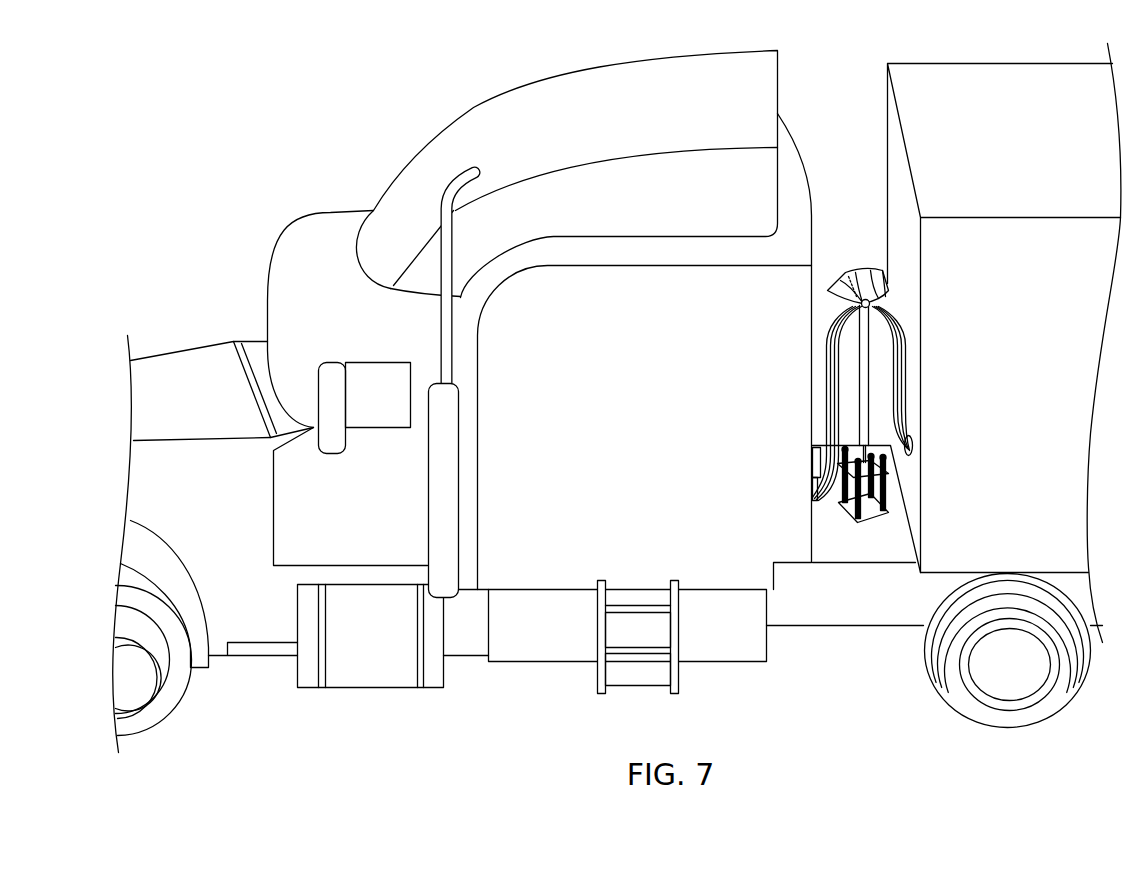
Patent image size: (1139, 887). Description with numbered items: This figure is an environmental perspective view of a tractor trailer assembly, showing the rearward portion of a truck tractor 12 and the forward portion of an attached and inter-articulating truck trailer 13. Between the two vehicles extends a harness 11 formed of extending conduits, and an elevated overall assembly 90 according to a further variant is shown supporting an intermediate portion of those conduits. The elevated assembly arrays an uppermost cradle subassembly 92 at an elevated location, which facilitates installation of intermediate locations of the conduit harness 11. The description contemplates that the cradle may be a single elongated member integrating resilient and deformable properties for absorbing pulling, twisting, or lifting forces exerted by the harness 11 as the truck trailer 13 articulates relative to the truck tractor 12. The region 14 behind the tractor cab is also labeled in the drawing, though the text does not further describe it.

The harness 11 is at (823, 369).
The truck tractor 12 is at (596, 82).
The truck trailer 13 is at (1006, 82).
The tractor frame deck 14 is at (862, 550).
The elevated overall assembly 90 is at (912, 273).
The cradle subassembly 92 is at (860, 255).